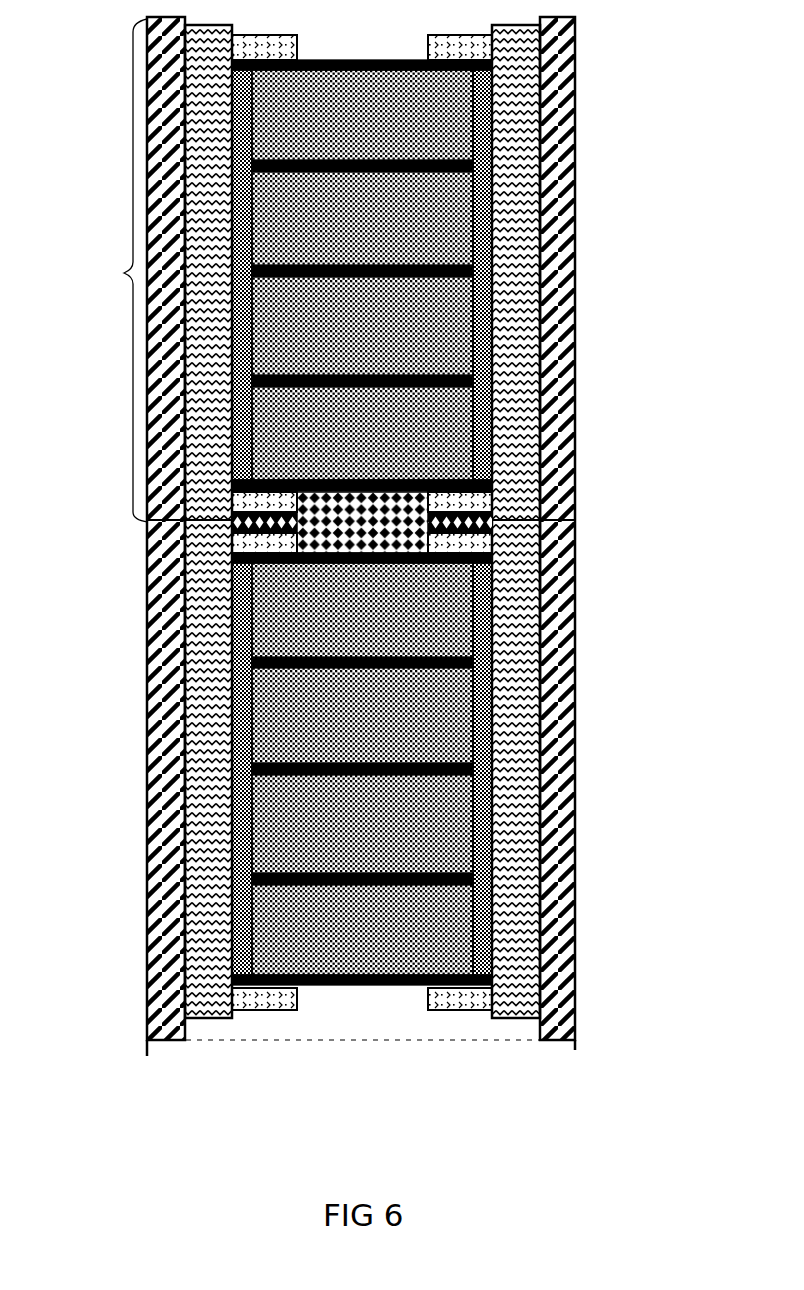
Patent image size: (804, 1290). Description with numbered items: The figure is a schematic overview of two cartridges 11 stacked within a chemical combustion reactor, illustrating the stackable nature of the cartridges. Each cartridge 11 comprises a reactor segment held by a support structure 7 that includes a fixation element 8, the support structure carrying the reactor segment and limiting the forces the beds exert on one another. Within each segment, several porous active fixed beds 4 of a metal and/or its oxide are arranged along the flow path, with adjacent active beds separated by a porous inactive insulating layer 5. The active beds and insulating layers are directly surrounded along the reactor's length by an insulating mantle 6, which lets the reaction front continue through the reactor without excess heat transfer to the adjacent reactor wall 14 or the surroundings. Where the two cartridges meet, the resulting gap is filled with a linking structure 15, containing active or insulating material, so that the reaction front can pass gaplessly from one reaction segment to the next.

The porous active fixed bed 4 is at (400, 115).
The porous inactive insulating layer 5 is at (375, 778).
The insulating mantle 6 is at (495, 341).
The support structure 7 is at (212, 338).
The fixation element 8 is at (236, 498).
The cartridge 11 is at (130, 273).
The reactor wall 14 is at (553, 873).
The linking structure 15 is at (380, 525).